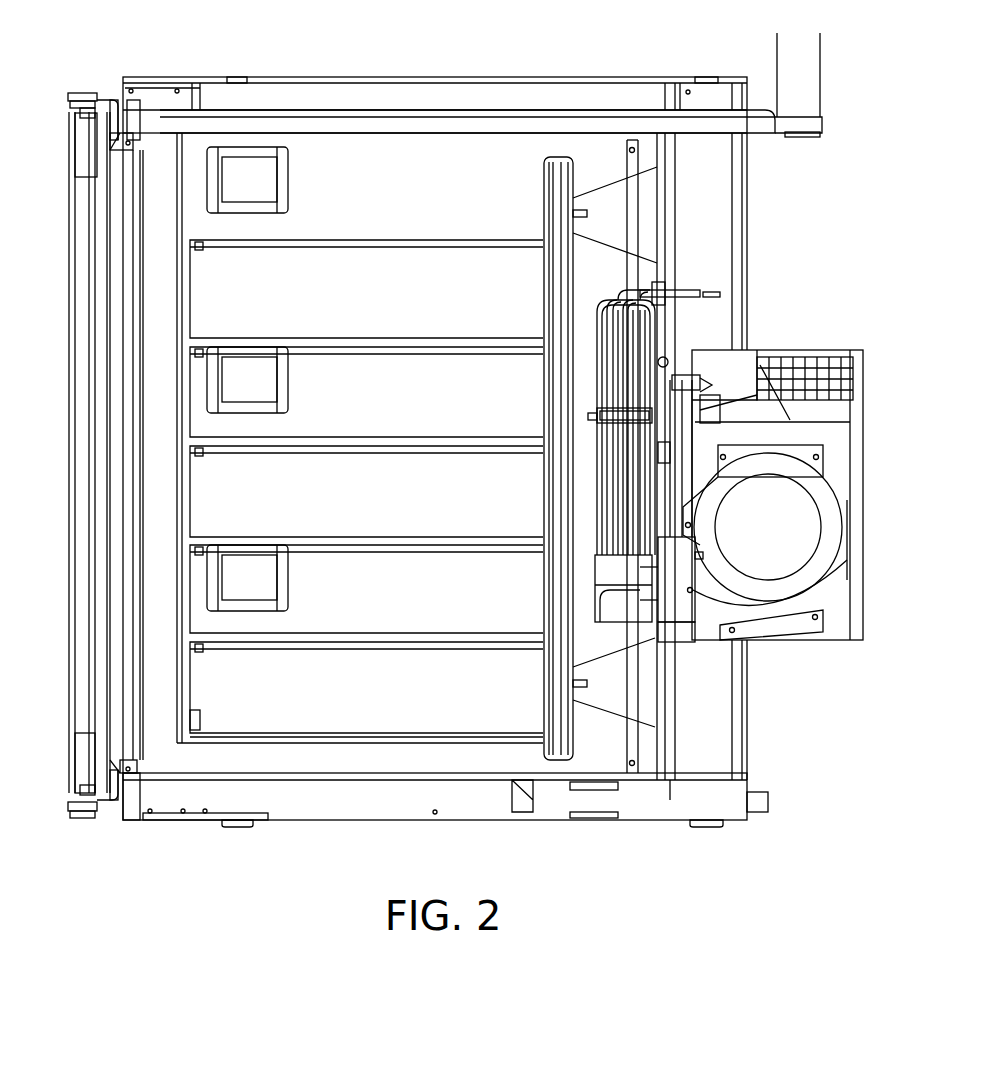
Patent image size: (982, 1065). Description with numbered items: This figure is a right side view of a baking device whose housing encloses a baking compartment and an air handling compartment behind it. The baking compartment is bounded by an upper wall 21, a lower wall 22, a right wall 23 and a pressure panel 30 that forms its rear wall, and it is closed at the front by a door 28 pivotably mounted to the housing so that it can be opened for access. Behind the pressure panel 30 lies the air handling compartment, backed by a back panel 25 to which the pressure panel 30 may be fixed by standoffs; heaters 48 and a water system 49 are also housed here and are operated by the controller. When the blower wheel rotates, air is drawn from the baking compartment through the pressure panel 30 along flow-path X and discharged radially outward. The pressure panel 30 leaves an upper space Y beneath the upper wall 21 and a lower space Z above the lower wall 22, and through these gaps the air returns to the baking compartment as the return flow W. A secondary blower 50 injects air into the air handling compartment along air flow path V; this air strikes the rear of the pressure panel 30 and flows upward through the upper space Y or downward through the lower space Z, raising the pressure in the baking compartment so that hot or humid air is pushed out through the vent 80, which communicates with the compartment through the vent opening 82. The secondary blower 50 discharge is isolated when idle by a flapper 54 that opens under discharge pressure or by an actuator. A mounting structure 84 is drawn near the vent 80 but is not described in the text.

The upper wall 21 is at (443, 140).
The lower wall 22 is at (272, 777).
The right wall 23 is at (363, 713).
The back panel 25 is at (657, 163).
The door 28 is at (103, 470).
The pressure panel 30 is at (577, 648).
The heater 48 is at (640, 477).
The water system 49 is at (665, 385).
The secondary blower 50 is at (788, 598).
The flapper 54 is at (693, 592).
The vent 80 is at (335, 120).
The vent opening 82 is at (138, 140).
The mounting bracket 84 is at (793, 60).
The upper space Y is at (605, 197).
The return air flow W is at (517, 727).
The flow-path X is at (597, 408).
The air flow path V is at (610, 253).
The lower space Z is at (563, 767).